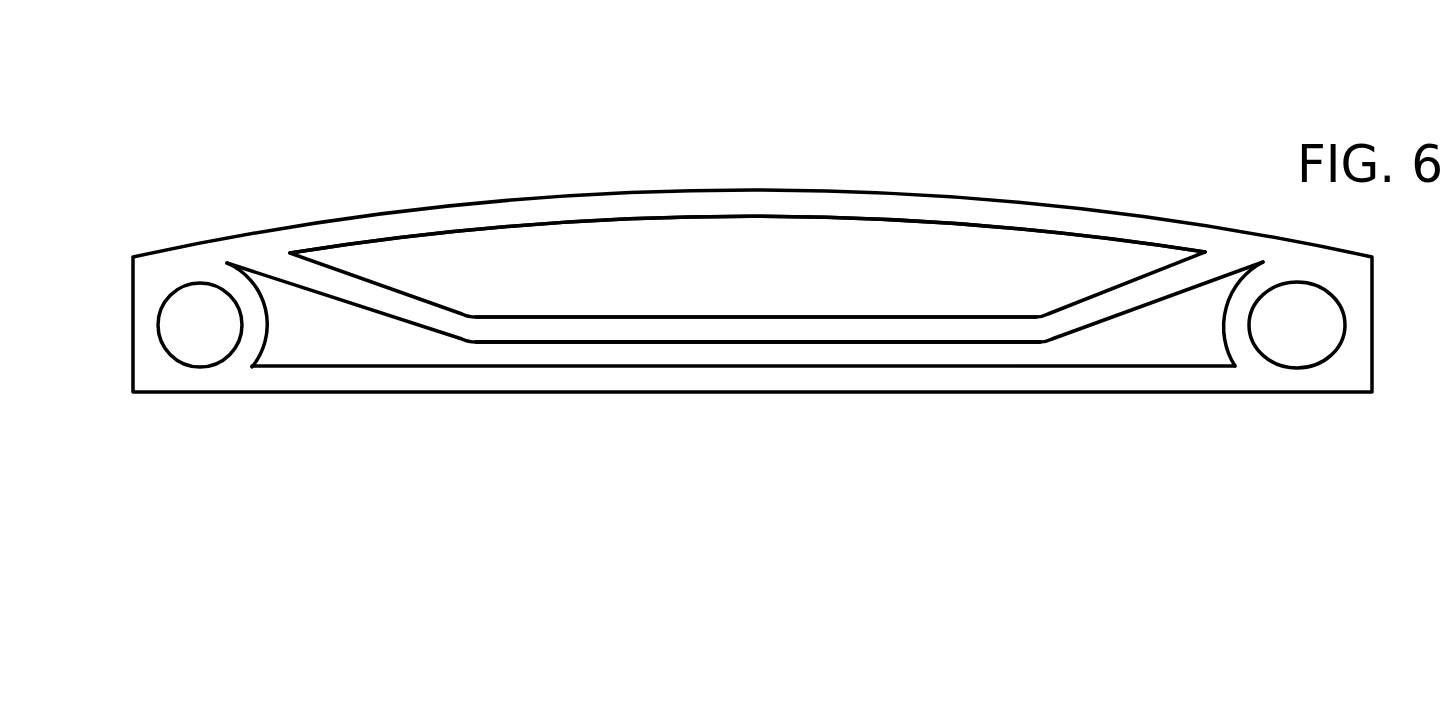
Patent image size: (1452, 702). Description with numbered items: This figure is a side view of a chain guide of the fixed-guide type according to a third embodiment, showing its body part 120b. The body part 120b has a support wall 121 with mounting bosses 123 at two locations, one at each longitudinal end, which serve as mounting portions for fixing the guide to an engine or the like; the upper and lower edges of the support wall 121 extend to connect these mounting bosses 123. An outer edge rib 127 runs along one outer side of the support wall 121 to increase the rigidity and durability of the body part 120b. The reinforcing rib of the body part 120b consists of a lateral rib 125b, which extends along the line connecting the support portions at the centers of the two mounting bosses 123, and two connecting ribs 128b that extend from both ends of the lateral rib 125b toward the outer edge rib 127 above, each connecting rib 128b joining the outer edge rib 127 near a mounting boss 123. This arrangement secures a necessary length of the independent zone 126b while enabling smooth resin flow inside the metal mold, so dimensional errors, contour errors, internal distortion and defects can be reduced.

The body part 120b is at (312, 198).
The support wall 121 is at (575, 255).
The mounting boss 123 is at (250, 330).
The lateral rib 125b is at (725, 325).
The independent zone 126b is at (653, 423).
The outer edge rib 127 is at (907, 208).
The connecting rib 128b is at (358, 290).